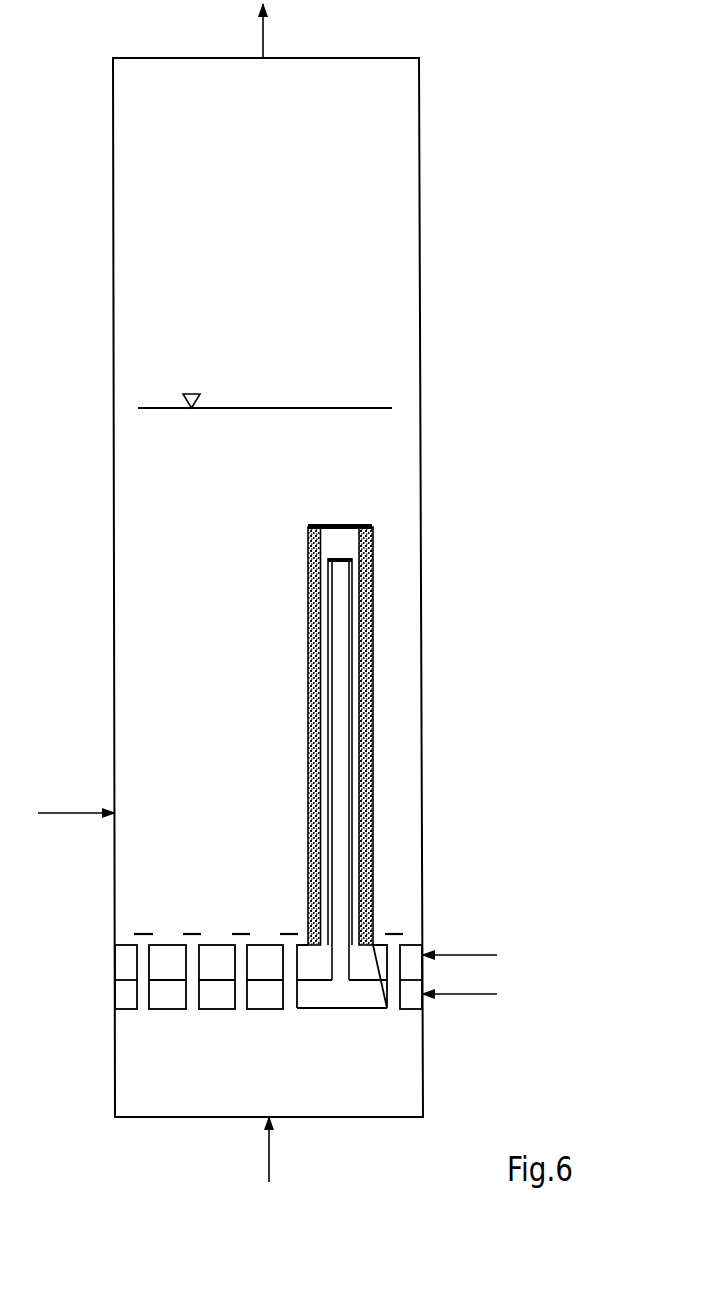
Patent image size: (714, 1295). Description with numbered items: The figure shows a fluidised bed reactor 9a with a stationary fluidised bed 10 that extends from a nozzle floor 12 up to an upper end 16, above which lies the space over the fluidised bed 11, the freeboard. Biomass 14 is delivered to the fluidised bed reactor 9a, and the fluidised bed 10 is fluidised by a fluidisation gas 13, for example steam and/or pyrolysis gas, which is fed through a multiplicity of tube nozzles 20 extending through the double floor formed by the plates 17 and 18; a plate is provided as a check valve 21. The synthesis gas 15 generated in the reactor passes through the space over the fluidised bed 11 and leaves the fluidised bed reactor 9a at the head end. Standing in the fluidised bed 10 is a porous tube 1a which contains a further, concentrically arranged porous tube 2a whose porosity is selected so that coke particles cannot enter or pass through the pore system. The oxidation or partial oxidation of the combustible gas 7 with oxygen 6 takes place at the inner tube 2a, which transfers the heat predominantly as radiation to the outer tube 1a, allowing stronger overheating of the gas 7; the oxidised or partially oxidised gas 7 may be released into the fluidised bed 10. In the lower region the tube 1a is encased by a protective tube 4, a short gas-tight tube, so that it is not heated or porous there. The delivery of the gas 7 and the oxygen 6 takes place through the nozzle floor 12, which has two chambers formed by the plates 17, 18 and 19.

The fluidised bed reactor 9a is at (463, 133).
The fluidised bed 10 is at (397, 523).
The space over the fluidised bed 11 is at (390, 259).
The porous tube 1a is at (372, 588).
The inner porous tube 2a is at (343, 663).
The protective tube 4 is at (310, 863).
The oxygen 6 is at (459, 980).
The combustible gas 7 is at (459, 941).
The nozzle floor 12 is at (262, 1025).
The fluidisation gas 13 is at (282, 1151).
The biomass 14 is at (76, 799).
The synthesis gas 15 is at (279, 31).
The upper end 16 is at (345, 407).
The plate 17 is at (126, 1009).
The plate 18 is at (126, 945).
The plate 19 is at (126, 980).
The tube nozzle 20 is at (192, 1010).
The check valve 21 is at (193, 933).